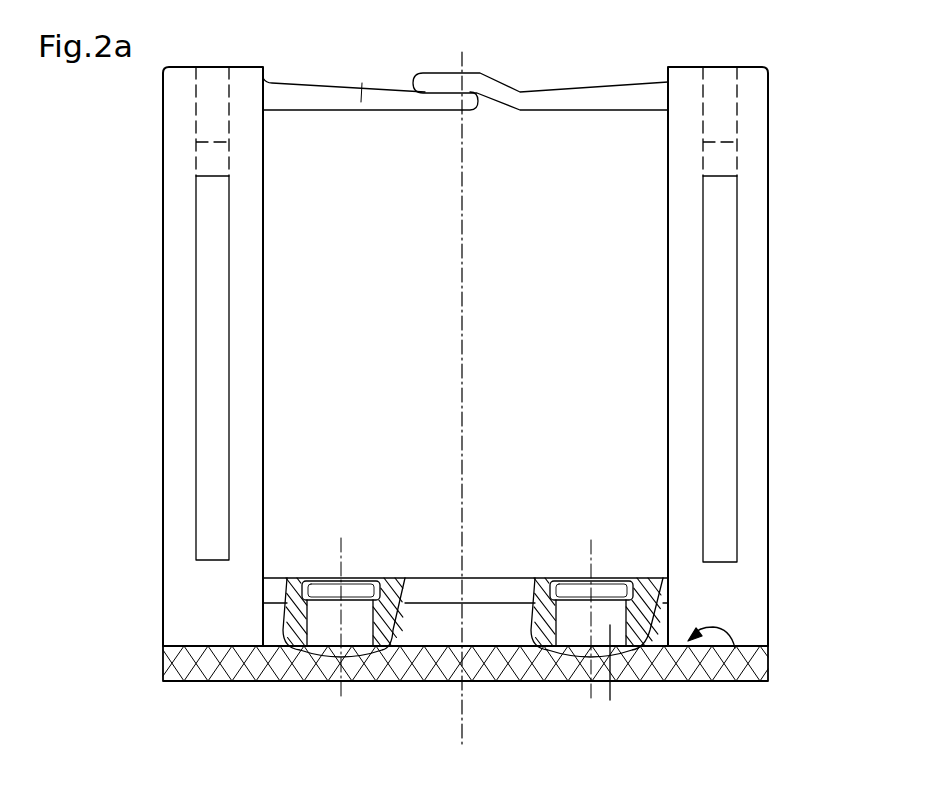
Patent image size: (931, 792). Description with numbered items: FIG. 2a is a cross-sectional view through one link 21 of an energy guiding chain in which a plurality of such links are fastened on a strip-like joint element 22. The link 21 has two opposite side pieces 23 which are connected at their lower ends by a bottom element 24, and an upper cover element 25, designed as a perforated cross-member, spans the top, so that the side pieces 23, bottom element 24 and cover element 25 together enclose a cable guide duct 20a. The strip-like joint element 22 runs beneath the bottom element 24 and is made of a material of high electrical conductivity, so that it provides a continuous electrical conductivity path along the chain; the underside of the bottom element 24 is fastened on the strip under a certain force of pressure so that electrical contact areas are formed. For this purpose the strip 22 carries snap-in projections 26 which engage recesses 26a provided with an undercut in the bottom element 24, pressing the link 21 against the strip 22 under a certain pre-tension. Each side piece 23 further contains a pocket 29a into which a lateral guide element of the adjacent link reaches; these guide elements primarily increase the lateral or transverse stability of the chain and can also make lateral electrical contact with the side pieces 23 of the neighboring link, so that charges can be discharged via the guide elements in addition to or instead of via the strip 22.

The link 21 is at (136, 438).
The cable guide duct 20a is at (309, 150).
The upper cover element 25 is at (563, 102).
The pocket 29a is at (715, 305).
The side piece 23 is at (760, 372).
The bottom element 24 is at (498, 590).
The recess 26a is at (549, 590).
The snap-in projection 26 is at (578, 592).
The strip-like joint element 22 is at (507, 660).